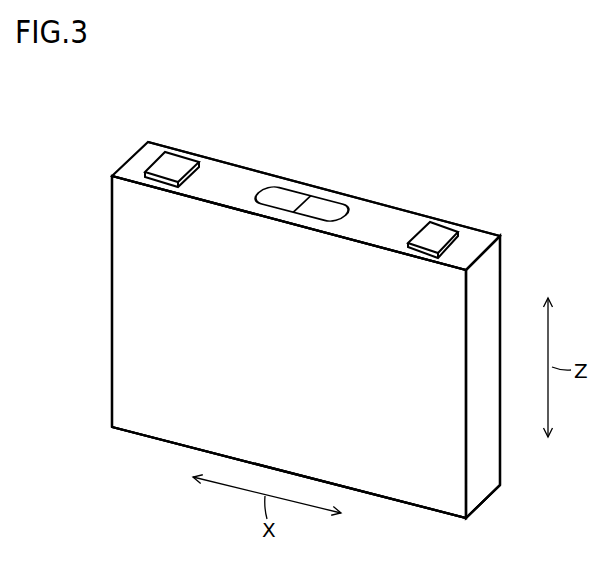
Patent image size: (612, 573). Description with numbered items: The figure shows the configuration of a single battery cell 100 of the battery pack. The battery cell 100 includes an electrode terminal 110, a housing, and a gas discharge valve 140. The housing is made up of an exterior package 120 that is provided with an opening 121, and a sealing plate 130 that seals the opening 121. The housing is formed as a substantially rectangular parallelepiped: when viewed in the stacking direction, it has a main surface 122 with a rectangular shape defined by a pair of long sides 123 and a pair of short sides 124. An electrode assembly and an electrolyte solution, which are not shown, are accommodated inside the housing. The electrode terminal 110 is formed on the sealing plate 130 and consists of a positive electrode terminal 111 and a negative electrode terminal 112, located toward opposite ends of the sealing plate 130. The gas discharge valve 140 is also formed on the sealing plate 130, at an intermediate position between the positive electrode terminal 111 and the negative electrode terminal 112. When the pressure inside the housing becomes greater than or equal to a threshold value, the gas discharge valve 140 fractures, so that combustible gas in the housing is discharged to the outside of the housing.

The battery cell 100 is at (299, 311).
The electrode terminal 110 is at (301, 165).
The positive electrode terminal 111 is at (171, 165).
The negative electrode terminal 112 is at (433, 181).
The exterior package 120 is at (383, 488).
The opening 121 is at (360, 196).
The main surface 122 is at (173, 394).
The long sides 123 is at (418, 260).
The short sides 124 is at (109, 322).
The sealing plate 130 is at (469, 245).
The gas discharge valve 140 is at (272, 197).